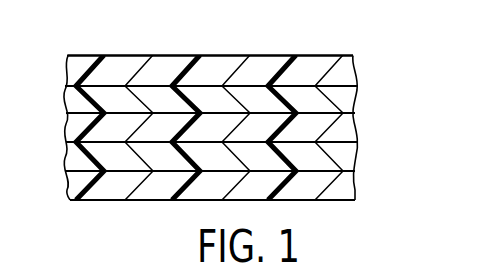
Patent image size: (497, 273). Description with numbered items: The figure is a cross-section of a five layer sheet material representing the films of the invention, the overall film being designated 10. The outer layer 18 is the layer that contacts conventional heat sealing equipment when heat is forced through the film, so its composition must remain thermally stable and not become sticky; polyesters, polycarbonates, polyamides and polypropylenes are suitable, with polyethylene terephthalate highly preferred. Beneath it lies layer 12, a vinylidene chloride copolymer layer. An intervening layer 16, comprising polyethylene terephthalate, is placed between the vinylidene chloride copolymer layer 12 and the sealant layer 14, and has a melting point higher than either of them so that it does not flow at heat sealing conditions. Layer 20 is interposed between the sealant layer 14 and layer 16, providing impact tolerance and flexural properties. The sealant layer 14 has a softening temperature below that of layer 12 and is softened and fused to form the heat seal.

The film 10 is at (323, 48).
The outer layer 18 is at (358, 71).
The vinylidene chloride copolymer layer 12 is at (358, 97).
The intervening layer 16 is at (358, 125).
The interposed layer 20 is at (358, 152).
The sealant layer 14 is at (358, 188).